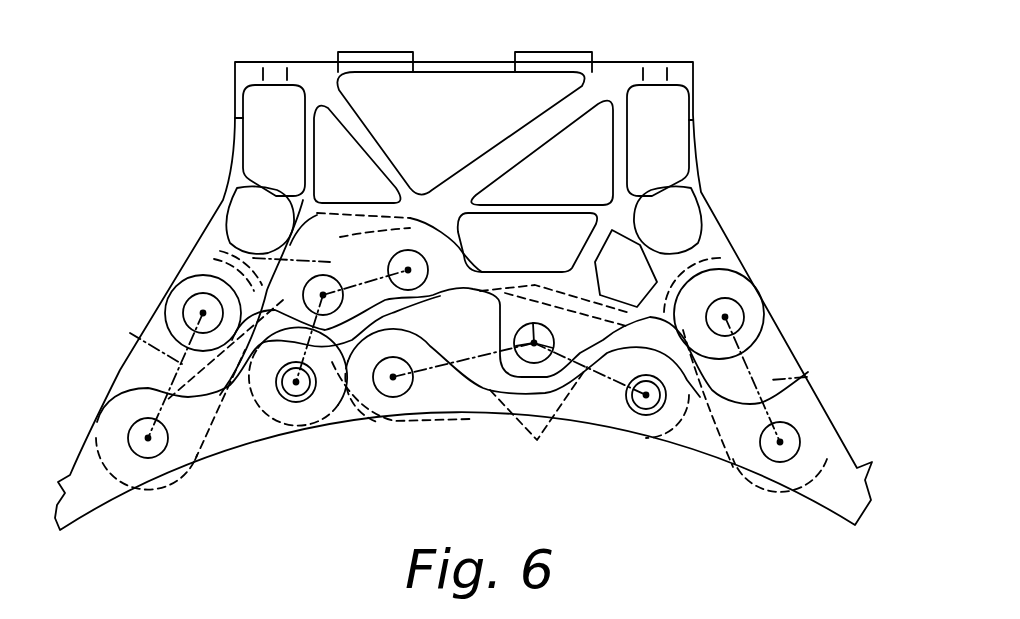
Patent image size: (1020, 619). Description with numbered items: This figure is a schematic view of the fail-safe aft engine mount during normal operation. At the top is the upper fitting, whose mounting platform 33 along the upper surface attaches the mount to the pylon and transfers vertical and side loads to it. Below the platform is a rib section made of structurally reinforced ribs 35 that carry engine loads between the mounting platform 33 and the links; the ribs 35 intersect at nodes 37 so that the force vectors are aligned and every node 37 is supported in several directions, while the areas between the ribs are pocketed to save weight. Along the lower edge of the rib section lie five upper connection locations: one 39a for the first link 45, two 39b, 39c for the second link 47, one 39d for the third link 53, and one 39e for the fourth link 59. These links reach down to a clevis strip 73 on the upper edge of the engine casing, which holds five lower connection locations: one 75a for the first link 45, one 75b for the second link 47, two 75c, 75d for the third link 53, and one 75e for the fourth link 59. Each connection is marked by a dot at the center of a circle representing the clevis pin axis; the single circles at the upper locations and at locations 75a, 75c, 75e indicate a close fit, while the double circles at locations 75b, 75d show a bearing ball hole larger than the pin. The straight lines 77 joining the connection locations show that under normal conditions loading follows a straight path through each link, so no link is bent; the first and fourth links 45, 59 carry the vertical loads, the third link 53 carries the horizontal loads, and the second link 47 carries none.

The mounting platform 33 is at (596, 62).
The ribs 35 is at (358, 133).
The nodes 37 is at (314, 200).
The upper connection location 39a is at (203, 313).
The upper connection location 39b is at (323, 295).
The upper connection location 39c is at (409, 268).
The upper connection location 39d is at (534, 343).
The upper connection location 39e is at (725, 317).
The first link 45 is at (110, 391).
The second link 47 is at (263, 418).
The third link 53 is at (382, 427).
The fourth link 59 is at (801, 348).
The clevis strip 73 is at (832, 478).
The lower connection location 75a is at (148, 438).
The lower connection location 75b is at (296, 382).
The lower connection location 75c is at (393, 377).
The lower connection location 75d is at (646, 395).
The lower connection location 75e is at (780, 442).
The lines 77 is at (253, 258).